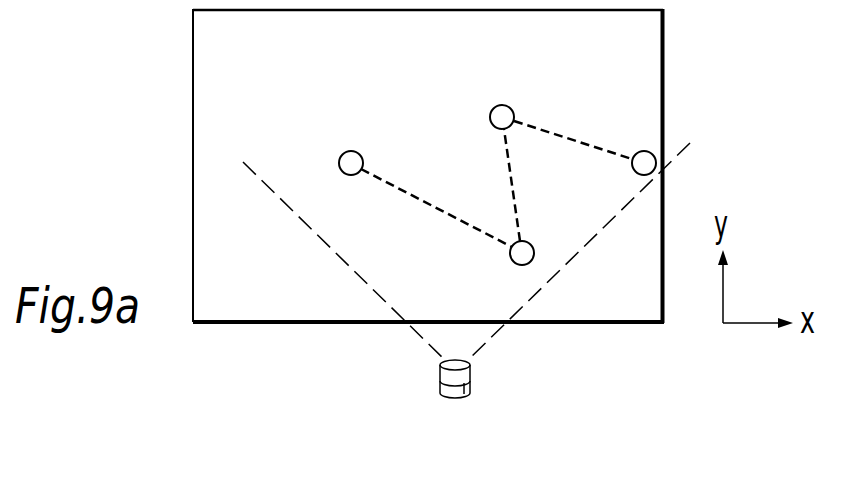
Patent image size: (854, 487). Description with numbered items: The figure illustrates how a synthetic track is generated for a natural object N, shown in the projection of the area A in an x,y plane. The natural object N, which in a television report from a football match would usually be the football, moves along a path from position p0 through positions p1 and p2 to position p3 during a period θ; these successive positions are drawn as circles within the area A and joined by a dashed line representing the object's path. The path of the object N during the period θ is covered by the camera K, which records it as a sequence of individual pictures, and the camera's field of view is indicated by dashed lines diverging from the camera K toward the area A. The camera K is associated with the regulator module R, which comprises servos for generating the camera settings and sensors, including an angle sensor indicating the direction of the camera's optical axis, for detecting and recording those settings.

The area A is at (193, 42).
The camera K is at (440, 373).
The regulator module R is at (470, 392).